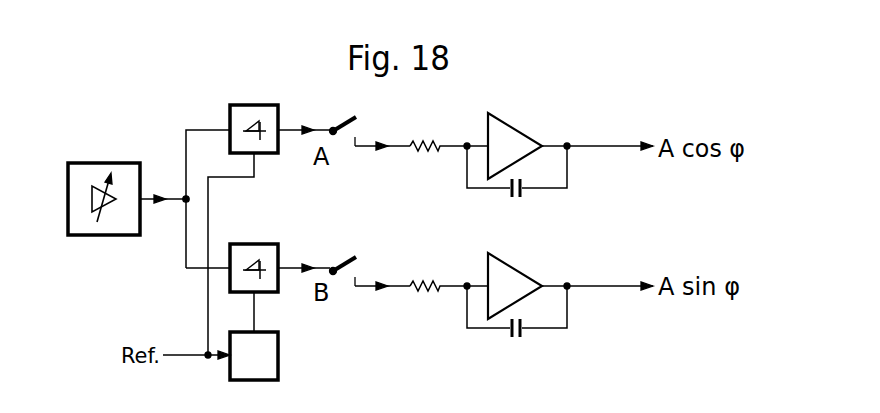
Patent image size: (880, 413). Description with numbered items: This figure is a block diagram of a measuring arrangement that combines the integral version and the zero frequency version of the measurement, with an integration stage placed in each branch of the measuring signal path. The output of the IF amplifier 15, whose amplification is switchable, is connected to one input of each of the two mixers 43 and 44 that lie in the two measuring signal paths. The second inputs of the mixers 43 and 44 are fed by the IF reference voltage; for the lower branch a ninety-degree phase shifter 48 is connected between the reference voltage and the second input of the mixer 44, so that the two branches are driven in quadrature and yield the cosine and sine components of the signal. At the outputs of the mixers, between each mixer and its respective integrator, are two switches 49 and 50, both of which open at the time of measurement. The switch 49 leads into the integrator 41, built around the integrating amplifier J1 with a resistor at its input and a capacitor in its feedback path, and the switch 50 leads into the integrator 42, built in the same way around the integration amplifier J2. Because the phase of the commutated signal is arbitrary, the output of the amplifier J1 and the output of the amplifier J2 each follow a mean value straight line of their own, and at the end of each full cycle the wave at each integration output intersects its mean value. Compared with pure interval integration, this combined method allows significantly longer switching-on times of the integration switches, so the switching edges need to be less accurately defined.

The IF amplifier 15 is at (104, 183).
The mixer 43 is at (251, 105).
The mixer 44 is at (250, 244).
The 90° phase shifter 48 is at (280, 354).
The switch 49 is at (359, 128).
The switch 50 is at (359, 268).
The integrator 41 is at (504, 166).
The integrator 42 is at (504, 314).
The integrating amplifier J1 is at (503, 122).
The integration amplifier J2 is at (512, 268).